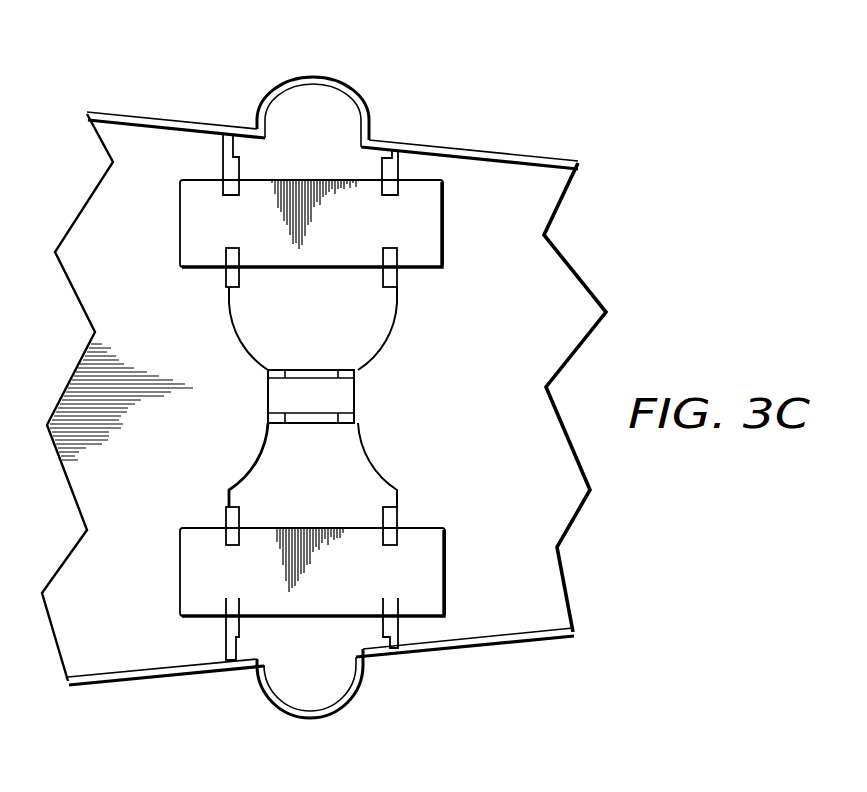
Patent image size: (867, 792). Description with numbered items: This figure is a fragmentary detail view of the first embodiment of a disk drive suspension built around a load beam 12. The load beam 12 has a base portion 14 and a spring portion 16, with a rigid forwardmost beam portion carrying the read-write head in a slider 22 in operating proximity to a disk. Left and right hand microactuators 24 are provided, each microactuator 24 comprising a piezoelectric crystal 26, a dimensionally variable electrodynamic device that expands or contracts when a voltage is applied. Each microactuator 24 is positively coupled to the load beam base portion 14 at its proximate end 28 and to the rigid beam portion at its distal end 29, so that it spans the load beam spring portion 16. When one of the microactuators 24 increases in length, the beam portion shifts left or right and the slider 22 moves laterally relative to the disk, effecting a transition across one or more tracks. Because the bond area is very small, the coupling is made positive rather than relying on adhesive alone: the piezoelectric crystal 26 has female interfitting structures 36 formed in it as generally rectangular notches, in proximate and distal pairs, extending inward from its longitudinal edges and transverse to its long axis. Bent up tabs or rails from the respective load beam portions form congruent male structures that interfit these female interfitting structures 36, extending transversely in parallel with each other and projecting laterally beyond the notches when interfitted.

The load beam 12 is at (563, 293).
The base portion 14 is at (103, 238).
The spring portion 16 is at (310, 672).
The slider 22 is at (180, 568).
The microactuator 24 is at (370, 180).
The piezoelectric crystal 26 is at (349, 210).
The proximate end 28 is at (190, 218).
The distal end 29 is at (444, 203).
The female interfitting structures 36 is at (396, 186).